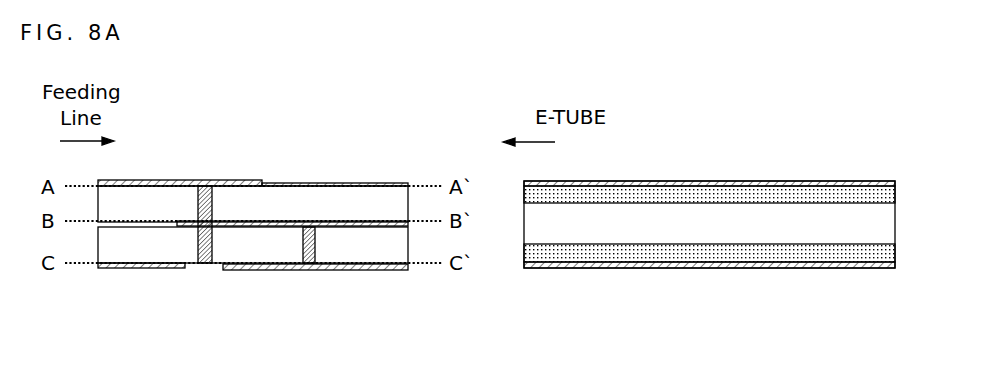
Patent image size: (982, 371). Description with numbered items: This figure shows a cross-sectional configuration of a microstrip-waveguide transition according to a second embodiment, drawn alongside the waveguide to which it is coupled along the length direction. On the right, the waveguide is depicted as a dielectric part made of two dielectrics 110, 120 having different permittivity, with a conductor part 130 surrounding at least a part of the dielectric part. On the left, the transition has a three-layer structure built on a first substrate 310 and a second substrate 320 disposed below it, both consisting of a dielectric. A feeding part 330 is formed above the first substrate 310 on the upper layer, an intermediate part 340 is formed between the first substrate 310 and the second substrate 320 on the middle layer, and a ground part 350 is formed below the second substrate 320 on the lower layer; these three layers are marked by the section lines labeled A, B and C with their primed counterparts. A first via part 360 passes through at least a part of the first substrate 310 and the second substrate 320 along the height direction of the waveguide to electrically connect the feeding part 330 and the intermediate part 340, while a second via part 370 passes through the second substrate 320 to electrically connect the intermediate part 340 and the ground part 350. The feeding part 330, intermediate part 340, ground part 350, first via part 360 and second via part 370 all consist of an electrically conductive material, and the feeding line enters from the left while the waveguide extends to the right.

The dielectric 110 is at (848, 220).
The dielectric 120 is at (760, 195).
The conductor part 130 is at (684, 183).
The first substrate 310 is at (357, 197).
The second substrate 320 is at (147, 252).
The feeding part 330 is at (168, 180).
The intermediate part 340 is at (290, 221).
The ground part 350 is at (360, 270).
The first via part 360 is at (205, 183).
The second via part 370 is at (303, 247).